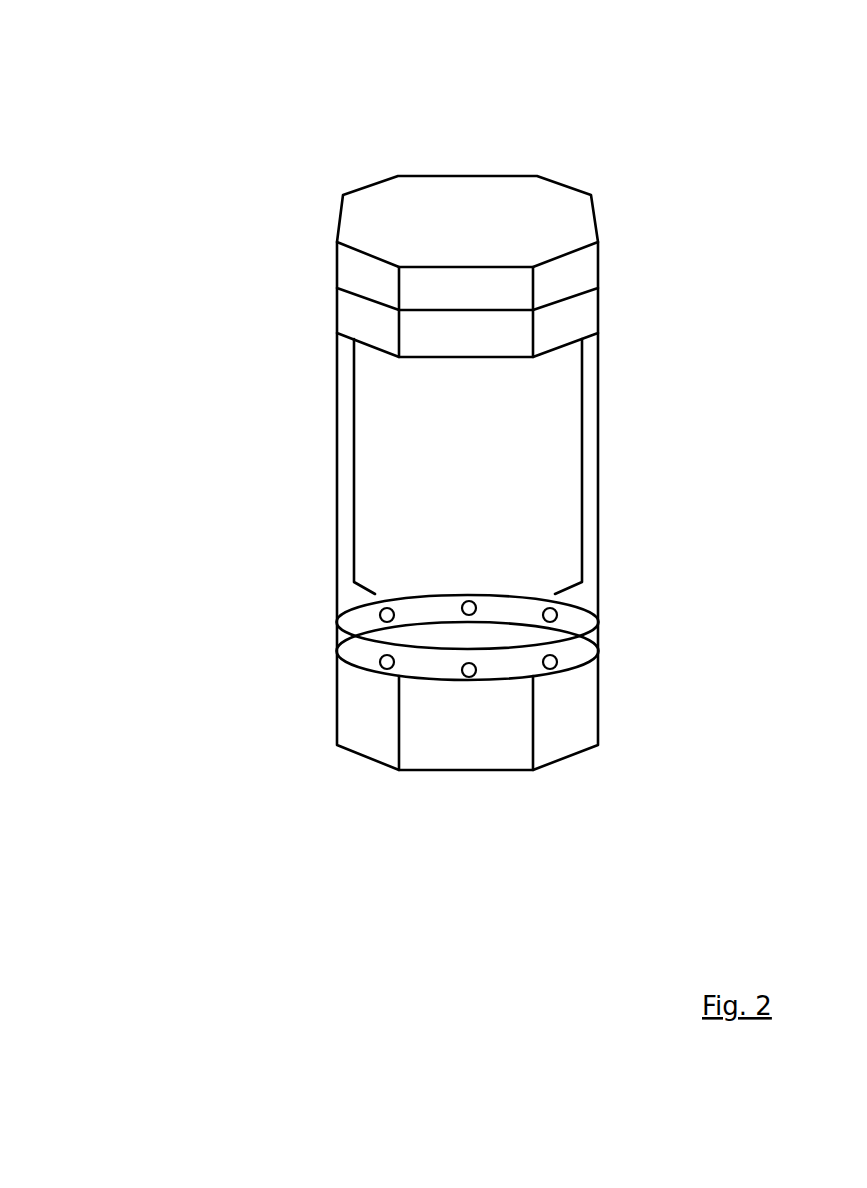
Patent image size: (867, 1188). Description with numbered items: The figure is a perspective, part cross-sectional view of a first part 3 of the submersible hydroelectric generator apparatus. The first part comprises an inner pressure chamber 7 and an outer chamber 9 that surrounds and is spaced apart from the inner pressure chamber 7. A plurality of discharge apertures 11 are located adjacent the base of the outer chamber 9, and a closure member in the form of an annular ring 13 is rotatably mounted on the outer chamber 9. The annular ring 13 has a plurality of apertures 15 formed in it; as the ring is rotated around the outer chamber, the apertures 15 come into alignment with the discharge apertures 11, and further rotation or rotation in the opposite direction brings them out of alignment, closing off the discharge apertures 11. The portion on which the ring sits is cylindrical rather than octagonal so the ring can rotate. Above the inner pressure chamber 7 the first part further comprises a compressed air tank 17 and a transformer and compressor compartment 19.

The device 3 is at (213, 140).
The inner pressure chamber 7 is at (502, 465).
The outer chamber 9 is at (597, 383).
The discharge apertures 11 is at (468, 600).
The annular ring 13 is at (598, 646).
The apertures 15 is at (383, 664).
The compressed air tank 17 is at (585, 313).
The transformer and compressor compartment 19 is at (578, 267).